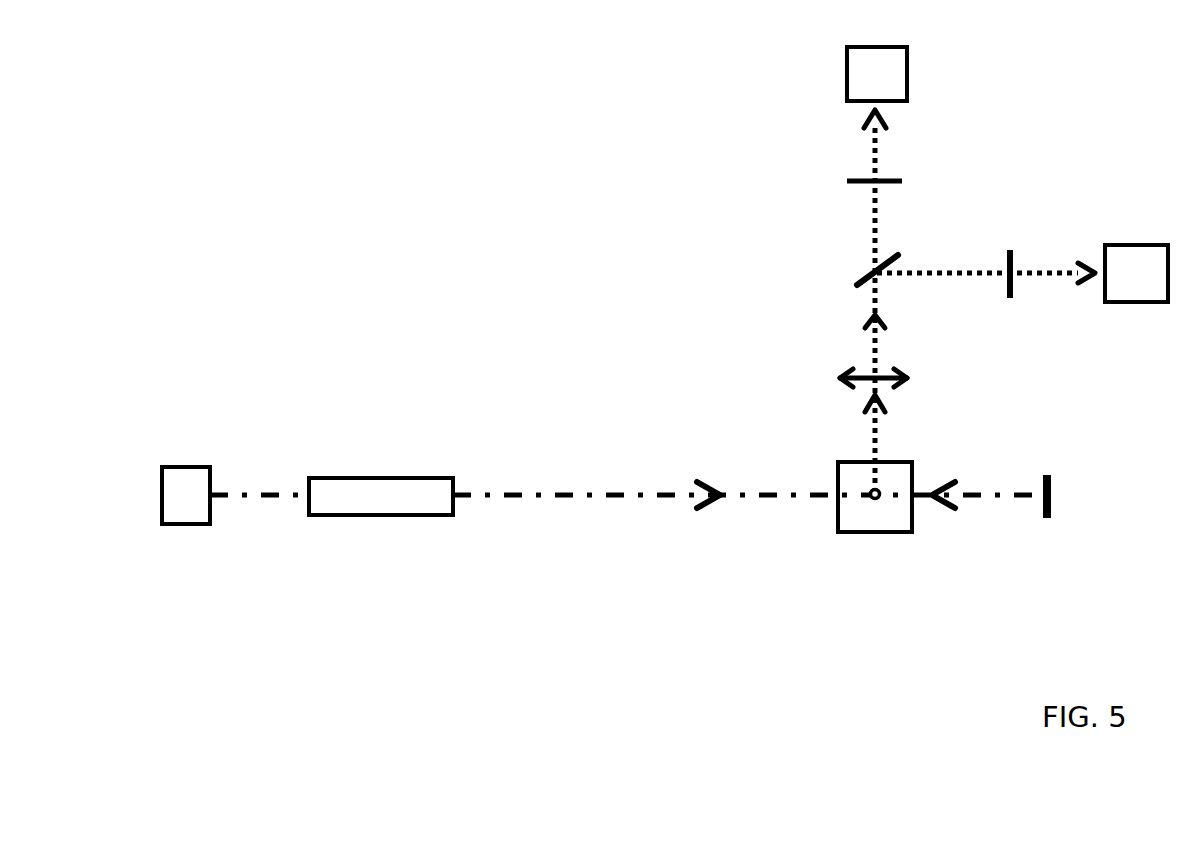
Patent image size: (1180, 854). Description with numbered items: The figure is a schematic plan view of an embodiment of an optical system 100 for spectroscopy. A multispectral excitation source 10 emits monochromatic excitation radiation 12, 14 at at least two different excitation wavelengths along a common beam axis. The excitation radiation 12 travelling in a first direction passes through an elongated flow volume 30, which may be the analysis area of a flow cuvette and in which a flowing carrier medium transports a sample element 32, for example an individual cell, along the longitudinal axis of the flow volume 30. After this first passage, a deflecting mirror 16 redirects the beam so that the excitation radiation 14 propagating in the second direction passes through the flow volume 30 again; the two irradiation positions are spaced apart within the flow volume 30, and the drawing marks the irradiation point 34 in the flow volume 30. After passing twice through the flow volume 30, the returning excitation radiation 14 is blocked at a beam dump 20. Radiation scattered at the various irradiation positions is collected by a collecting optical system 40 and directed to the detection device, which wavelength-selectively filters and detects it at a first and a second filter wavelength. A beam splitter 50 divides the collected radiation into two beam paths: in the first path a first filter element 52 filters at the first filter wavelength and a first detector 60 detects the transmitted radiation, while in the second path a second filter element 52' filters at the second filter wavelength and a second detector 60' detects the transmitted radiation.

The optical system for spectroscopy 100 is at (655, 247).
The beam dump 20 is at (186, 495).
The multispectral excitation source 10 is at (355, 470).
The excitation radiation 12 is at (697, 480).
The excitation radiation 14 is at (964, 475).
The deflecting mirror 16 is at (1053, 525).
The flow volume 30 is at (827, 457).
The sample element 32 is at (868, 490).
The sample / pivot point 34 is at (868, 493).
The collecting optical system 40 is at (917, 378).
The beam splitter 50 is at (859, 264).
The first filter element 52 is at (921, 150).
The first detector 60 is at (877, 74).
The second filter element 52' is at (1060, 250).
The second detector 60' is at (1136, 273).